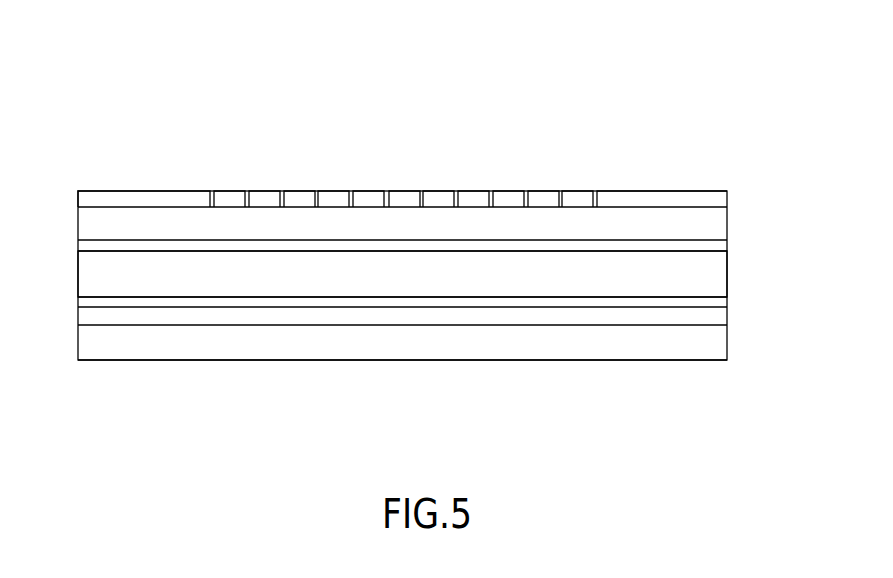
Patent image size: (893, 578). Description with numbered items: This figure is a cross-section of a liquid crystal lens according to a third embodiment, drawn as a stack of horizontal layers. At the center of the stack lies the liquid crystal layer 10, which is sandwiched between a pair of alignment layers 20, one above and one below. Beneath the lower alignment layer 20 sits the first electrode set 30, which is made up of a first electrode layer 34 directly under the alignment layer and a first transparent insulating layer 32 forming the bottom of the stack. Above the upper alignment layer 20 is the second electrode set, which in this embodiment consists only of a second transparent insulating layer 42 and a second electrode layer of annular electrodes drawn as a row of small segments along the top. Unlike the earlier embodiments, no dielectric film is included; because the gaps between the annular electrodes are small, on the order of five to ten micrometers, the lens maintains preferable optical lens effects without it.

The second transparent insulating layer 42 is at (677, 222).
The alignment layer 20 is at (710, 246).
The liquid crystal layer 10 is at (710, 273).
The first electrode set 30 is at (402, 388).
The first transparent insulating layer 32 is at (587, 338).
The first electrode layer 34 is at (638, 318).